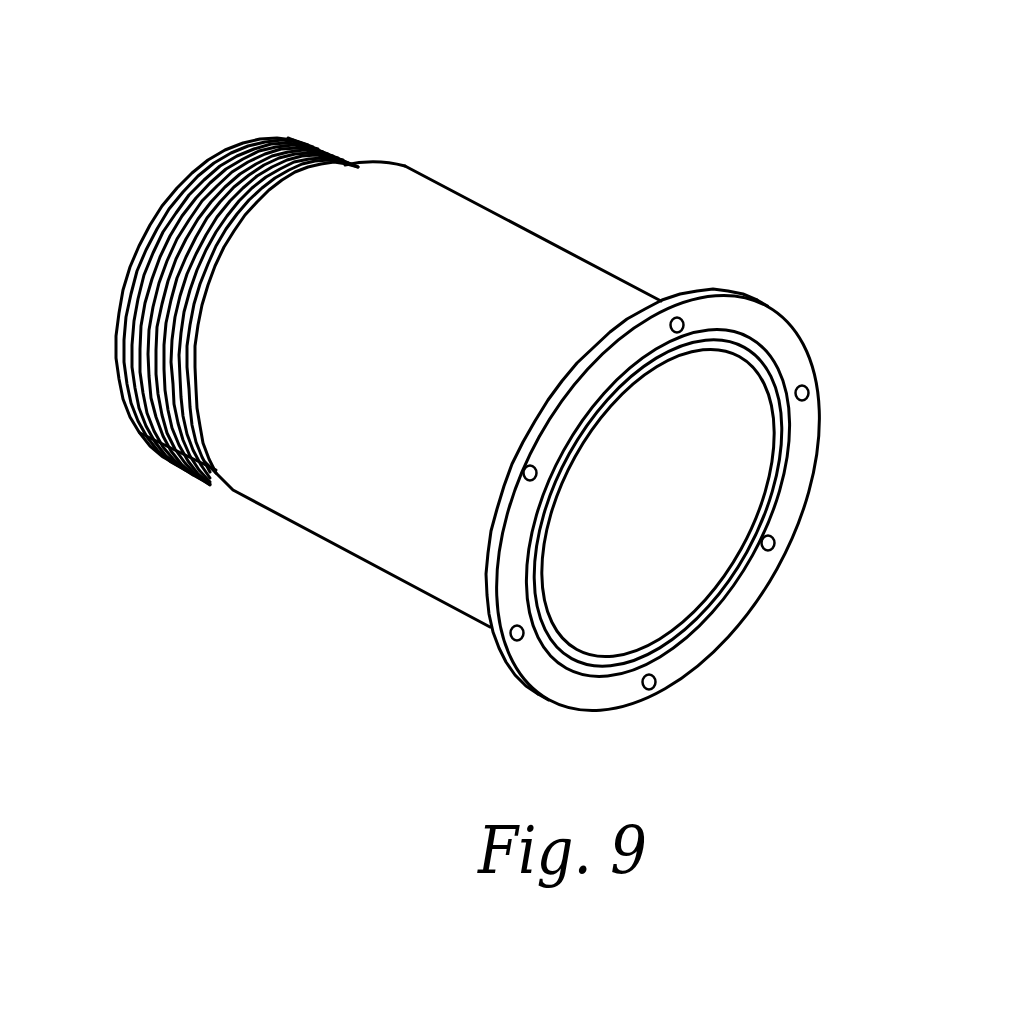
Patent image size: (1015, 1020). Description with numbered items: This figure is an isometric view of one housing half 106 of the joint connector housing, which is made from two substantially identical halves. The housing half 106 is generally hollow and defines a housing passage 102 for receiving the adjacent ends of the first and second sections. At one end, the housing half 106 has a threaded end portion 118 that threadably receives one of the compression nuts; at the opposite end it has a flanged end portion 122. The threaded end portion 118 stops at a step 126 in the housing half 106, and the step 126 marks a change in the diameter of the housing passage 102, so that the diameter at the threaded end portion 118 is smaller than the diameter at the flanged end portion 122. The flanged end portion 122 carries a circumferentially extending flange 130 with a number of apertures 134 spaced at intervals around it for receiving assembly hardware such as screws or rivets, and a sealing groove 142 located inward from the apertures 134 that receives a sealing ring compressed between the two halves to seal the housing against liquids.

The threaded end portion 118 is at (343, 158).
The step 126 is at (408, 165).
The housing half 106 is at (420, 372).
The housing passage 102 is at (692, 505).
The flanged end portion 122 is at (770, 308).
The flange 130 is at (794, 347).
The sealing groove 142 is at (794, 432).
The apertures 134 is at (678, 316).